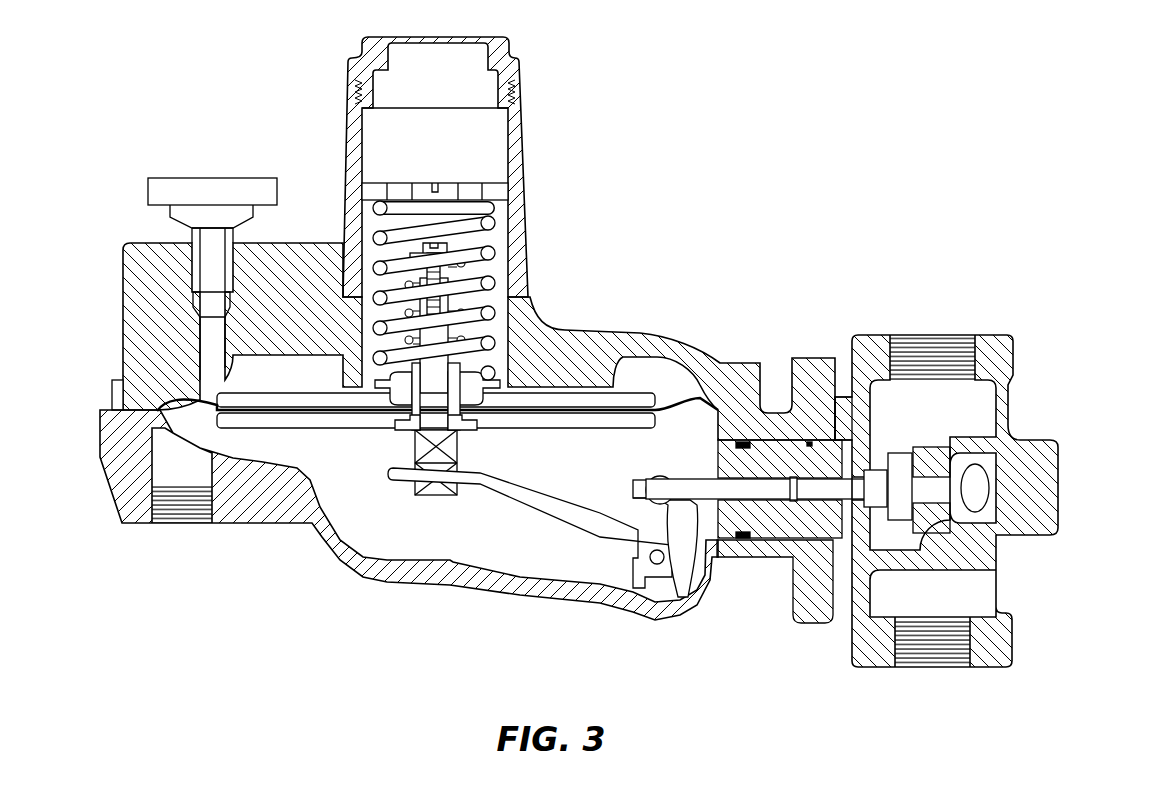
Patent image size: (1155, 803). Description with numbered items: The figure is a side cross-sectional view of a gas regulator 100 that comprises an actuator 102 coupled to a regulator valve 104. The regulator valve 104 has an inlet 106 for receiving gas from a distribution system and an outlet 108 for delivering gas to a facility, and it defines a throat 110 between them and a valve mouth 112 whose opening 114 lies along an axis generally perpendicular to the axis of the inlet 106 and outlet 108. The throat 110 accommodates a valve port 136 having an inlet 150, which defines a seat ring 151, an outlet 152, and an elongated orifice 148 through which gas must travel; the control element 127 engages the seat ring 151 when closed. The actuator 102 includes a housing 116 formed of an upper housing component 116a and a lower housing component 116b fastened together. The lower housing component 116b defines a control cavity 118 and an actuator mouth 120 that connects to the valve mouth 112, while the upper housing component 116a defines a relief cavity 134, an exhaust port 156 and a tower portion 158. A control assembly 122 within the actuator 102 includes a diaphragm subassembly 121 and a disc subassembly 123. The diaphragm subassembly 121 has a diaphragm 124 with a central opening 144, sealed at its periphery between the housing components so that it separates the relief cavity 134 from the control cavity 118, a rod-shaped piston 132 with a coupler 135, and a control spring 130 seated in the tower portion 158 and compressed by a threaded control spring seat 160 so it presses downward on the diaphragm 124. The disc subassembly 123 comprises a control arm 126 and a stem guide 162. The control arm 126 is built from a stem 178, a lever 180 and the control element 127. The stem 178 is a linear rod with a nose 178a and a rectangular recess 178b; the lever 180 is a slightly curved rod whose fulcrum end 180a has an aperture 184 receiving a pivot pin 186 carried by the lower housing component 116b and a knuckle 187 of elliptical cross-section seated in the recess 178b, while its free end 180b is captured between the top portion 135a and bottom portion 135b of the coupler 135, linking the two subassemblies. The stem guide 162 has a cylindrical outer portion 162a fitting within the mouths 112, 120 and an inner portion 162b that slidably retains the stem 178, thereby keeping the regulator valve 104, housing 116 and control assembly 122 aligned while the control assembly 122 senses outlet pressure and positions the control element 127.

The gas regulator 100 is at (754, 141).
The actuator 102 is at (432, 424).
The regulator valve 104 is at (974, 509).
The inlet 106 is at (955, 345).
The outlet 108 is at (943, 668).
The throat 110 is at (978, 505).
The valve mouth 112 is at (843, 363).
The opening 114 is at (826, 440).
The housing 116 is at (432, 431).
The upper housing component 116a is at (123, 300).
The lower housing component 116b is at (115, 468).
The control cavity 118 is at (367, 573).
The actuator mouth 120 is at (762, 548).
The diaphragm subassembly 121 is at (148, 189).
The control assembly 122 is at (483, 548).
The disc subassembly 123 is at (729, 545).
The diaphragm 124 is at (603, 413).
The control arm 126 is at (542, 521).
The control element 127 is at (832, 548).
The control spring 130 is at (378, 240).
The piston 132 is at (447, 328).
The relief cavity 134 is at (287, 363).
The coupler 135 is at (454, 445).
The top portion 135a is at (452, 449).
The bottom portion 135b is at (436, 497).
The valve port 136 is at (940, 480).
The opening 144 is at (437, 381).
The orifice 148 is at (960, 500).
The inlet 150 is at (913, 528).
The seat ring 151 is at (918, 522).
The outlet 152 is at (963, 473).
The exhaust port 156 is at (205, 318).
The tower portion 158 is at (523, 127).
The control spring seat 160 is at (492, 183).
The stem guide 162 is at (826, 627).
The outer portion 162a is at (829, 548).
The inner portion 162b is at (786, 560).
The stem 178 is at (722, 412).
The nose 178a is at (783, 440).
The recess 178b is at (642, 490).
The lever 180 is at (539, 569).
The fulcrum end 180a is at (683, 598).
The free end 180b is at (403, 480).
The aperture 184 is at (615, 598).
The pivot pin 186 is at (650, 562).
The knuckle 187 is at (660, 490).